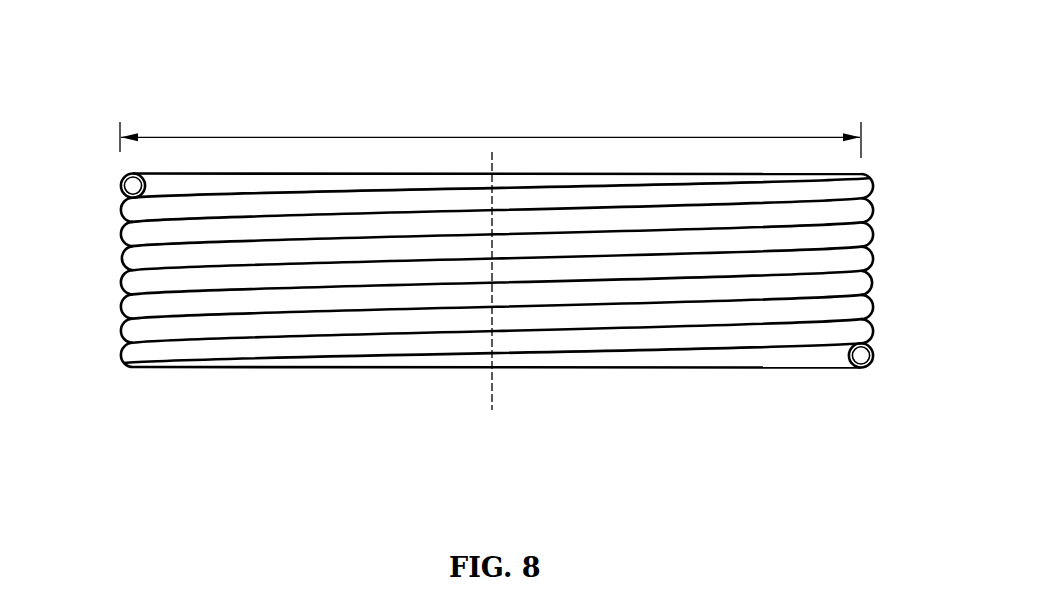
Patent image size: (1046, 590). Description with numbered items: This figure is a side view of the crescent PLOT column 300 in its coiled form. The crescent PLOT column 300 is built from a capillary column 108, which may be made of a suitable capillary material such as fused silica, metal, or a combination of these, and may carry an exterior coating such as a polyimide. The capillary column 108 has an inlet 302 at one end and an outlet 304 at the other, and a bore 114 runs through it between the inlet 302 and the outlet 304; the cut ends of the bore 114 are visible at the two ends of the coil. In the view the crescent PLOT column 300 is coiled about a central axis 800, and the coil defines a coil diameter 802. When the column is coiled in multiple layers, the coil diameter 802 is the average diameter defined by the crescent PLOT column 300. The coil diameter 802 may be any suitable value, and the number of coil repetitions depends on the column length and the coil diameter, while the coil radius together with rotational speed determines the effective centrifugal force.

The crescent PLOT column 300 is at (781, 77).
The capillary column 108 is at (289, 323).
The bore 114 is at (132, 184).
The inlet 302 is at (112, 184).
The outlet 304 is at (884, 350).
The central axis 800 is at (492, 390).
The coil diameter 802 is at (559, 136).